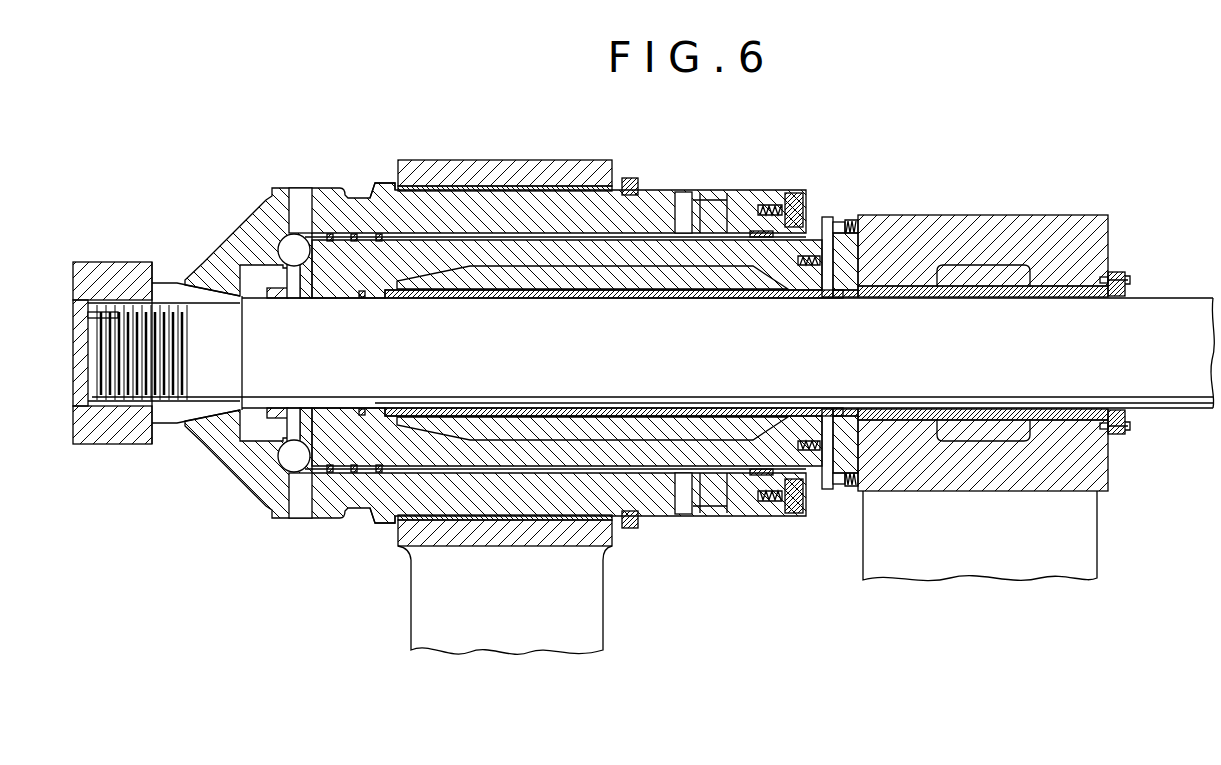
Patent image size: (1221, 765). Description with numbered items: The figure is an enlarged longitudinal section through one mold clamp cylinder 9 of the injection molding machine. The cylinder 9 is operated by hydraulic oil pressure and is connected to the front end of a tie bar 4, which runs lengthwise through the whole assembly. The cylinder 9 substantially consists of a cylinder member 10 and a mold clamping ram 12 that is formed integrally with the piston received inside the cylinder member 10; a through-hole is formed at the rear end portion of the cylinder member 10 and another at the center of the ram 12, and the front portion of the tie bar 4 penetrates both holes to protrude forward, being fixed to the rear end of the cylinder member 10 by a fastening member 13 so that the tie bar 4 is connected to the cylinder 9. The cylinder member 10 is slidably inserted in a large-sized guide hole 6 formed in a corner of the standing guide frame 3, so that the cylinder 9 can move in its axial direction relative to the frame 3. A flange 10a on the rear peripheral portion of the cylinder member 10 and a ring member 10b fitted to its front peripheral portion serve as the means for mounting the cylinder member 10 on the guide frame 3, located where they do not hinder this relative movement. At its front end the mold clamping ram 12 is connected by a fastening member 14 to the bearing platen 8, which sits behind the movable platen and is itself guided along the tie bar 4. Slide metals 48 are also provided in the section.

The guide frame 3 is at (426, 592).
The tie bar 4 is at (912, 378).
The guide hole 6 is at (528, 180).
The bearing platen 8 is at (1012, 228).
The mold clamp cylinder 9 is at (308, 530).
The cylinder member 10 is at (236, 237).
The flange 10a is at (376, 182).
The ring member 10b is at (633, 182).
The mold clamping ram 12 is at (648, 455).
The fastening member 13 is at (107, 277).
The fastening member 14 is at (840, 217).
The slide metal 48 is at (593, 182).